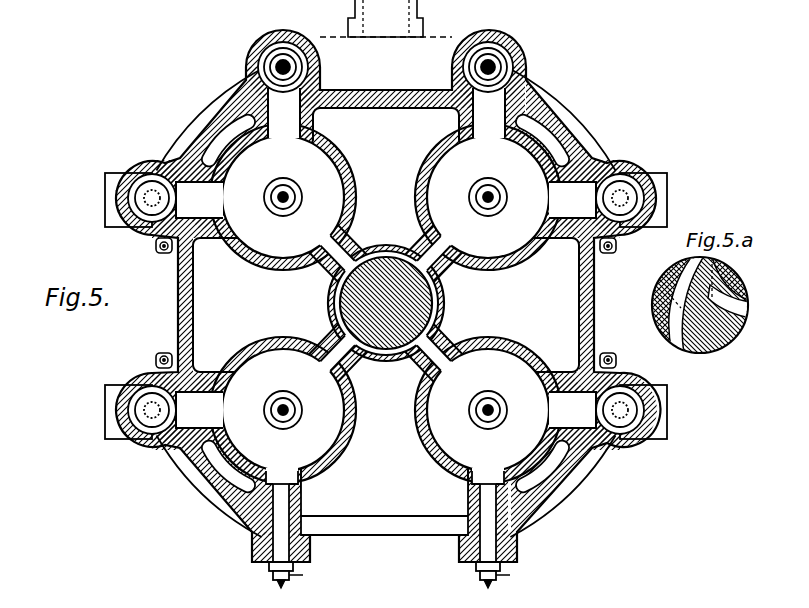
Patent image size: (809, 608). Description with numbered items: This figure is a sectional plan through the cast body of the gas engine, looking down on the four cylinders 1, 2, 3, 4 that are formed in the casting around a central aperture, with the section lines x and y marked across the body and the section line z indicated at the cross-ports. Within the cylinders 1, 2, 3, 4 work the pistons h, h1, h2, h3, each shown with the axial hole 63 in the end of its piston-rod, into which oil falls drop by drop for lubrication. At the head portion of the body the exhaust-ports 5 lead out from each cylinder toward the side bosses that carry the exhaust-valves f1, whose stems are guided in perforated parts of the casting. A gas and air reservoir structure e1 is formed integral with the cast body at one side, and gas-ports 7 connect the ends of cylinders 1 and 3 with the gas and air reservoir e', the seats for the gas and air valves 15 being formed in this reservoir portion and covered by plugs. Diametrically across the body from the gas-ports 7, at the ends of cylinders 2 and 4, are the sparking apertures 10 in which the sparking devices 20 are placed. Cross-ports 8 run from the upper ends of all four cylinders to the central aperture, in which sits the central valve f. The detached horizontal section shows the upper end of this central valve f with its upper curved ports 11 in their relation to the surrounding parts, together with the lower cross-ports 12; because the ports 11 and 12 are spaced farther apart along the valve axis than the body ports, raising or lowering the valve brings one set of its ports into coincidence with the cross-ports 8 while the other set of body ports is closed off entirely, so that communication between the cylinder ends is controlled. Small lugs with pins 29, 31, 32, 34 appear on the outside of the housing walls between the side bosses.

In FIG. 5, the cylinder 1 is at (329, 160).
In FIG. 5, the cylinder 2 is at (293, 352).
In FIG. 5, the cylinder 3 is at (537, 157).
In FIG. 5, the cylinder 4 is at (538, 352).
In FIG. 5, the exhaust-port 5 is at (386, 305).
In FIG. 5, the gas-port 7 is at (386, 113).
In FIG. 5, the cross-port 8 is at (319, 246).
In FIG. 5, the sparking aperture 10 is at (278, 478).
In FIG. 5A, the upper curved port 11 is at (710, 305).
In FIG. 5A, the lower cross-port 12 is at (715, 288).
In FIG. 5, the gas and air valve 15 is at (282, 58).
In FIG. 5, the sparking device 20 is at (253, 550).
In FIG. 5, the pin 29 is at (165, 251).
In FIG. 5, the lug 31 is at (158, 246).
In FIG. 5, the pin 32 is at (166, 355).
In FIG. 5, the lug 34 is at (158, 362).
In FIG. 5, the axial hole 63 is at (281, 195).
In FIG. 5, the gas and air reservoir structure e1 is at (533, 43).
In FIG. 5, the gas and air reservoir e' is at (385, 322).
In FIG. 5, the central valve f is at (387, 270).
In FIG. 5A, the central valve f is at (750, 307).
In FIG. 5, the exhaust-valve f1 is at (158, 173).
In FIG. 5, the piston h is at (283, 197).
In FIG. 5, the piston h1 is at (283, 410).
In FIG. 5, the piston h2 is at (488, 197).
In FIG. 5, the piston h3 is at (488, 410).
In FIG. 5, the section line z is at (323, 237).
In FIG. 5, the section line x is at (715, 197).
In FIG. 5, the section line y is at (705, 410).